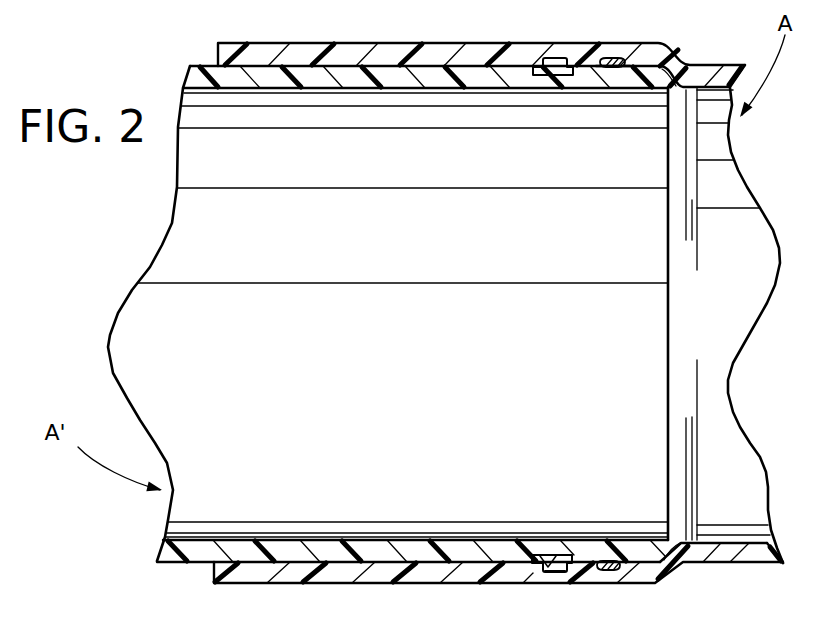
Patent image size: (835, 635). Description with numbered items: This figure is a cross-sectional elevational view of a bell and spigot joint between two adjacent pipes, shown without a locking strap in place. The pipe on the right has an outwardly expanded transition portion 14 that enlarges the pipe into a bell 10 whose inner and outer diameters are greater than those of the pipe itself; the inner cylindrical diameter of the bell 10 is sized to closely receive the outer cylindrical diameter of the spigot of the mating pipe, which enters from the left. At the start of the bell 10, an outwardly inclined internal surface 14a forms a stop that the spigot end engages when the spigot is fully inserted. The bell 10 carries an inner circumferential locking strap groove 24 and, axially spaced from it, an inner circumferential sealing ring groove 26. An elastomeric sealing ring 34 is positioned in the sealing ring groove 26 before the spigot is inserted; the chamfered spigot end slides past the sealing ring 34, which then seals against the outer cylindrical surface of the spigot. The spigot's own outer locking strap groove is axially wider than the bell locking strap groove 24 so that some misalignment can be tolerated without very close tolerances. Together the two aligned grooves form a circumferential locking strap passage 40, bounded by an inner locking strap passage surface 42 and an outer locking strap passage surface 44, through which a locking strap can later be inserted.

The bell 10 is at (412, 44).
The outwardly expanded transition portion 14 is at (677, 58).
The outwardly inclined internal surface 14a is at (664, 71).
The bell locking strap groove 24 is at (556, 58).
The sealing ring groove 26 is at (609, 63).
The elastomeric sealing ring 34 is at (613, 72).
The circumferential locking strap passage 40 is at (561, 557).
The inner locking strap passage surface 42 is at (548, 553).
The outer locking strap passage surface 44 is at (546, 572).